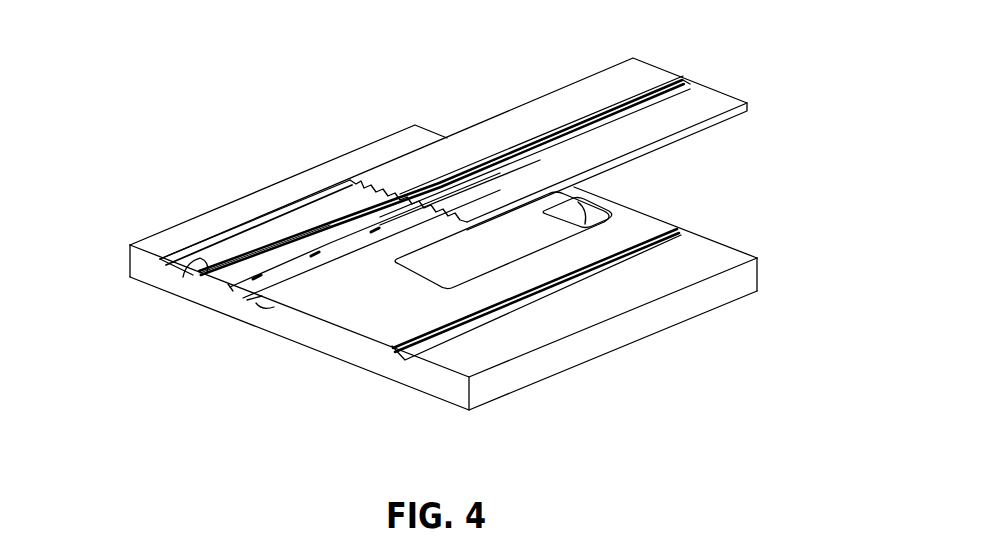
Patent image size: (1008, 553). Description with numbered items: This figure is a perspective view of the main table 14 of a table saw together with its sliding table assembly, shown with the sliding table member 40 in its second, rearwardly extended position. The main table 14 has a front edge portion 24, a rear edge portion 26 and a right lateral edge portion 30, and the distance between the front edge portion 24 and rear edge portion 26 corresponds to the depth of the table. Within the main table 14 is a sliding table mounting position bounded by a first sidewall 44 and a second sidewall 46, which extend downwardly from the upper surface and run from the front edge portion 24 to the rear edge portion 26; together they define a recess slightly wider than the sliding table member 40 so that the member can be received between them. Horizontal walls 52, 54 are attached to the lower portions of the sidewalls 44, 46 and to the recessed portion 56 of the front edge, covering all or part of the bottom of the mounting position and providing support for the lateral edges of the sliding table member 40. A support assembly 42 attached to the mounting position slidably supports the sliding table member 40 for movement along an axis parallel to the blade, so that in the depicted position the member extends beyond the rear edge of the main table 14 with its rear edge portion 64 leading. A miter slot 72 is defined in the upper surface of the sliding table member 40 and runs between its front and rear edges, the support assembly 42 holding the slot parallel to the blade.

The main table 14 is at (236, 114).
The front edge portion 24 is at (417, 375).
The rear edge portion 26 is at (140, 243).
The right lateral edge portion 30 is at (637, 327).
The sliding table member 40 is at (687, 135).
The support assembly 42 is at (191, 268).
The first sidewall 44 is at (312, 196).
The second sidewall 46 is at (310, 268).
The horizontal wall 52 is at (285, 237).
The horizontal wall 54 is at (258, 303).
The recessed portion 56 is at (168, 265).
The rear edge portion 64 is at (722, 92).
The miter slot 72 is at (553, 133).